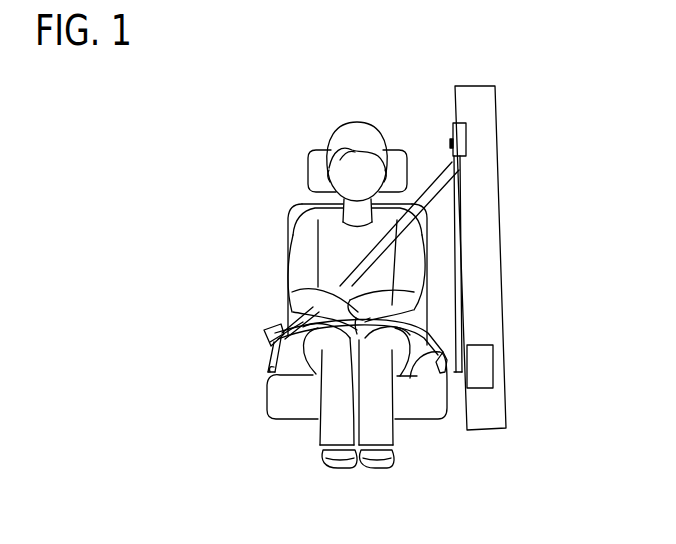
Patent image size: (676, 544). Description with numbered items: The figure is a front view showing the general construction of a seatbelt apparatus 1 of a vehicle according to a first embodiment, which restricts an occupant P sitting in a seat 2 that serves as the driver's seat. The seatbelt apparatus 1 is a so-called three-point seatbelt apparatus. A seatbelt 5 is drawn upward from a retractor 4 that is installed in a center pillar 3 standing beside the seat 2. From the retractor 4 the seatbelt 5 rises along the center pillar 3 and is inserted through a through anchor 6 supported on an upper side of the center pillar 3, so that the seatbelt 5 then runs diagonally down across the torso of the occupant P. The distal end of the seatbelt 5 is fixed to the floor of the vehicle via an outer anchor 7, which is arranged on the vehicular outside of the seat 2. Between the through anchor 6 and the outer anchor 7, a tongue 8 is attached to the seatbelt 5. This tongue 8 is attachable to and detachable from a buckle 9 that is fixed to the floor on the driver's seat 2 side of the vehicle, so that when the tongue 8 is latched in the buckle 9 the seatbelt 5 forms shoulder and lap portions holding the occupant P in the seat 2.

The seatbelt apparatus 1 is at (436, 104).
The seat 2 is at (298, 421).
The center pillar 3 is at (498, 220).
The retractor 4 is at (493, 357).
The seatbelt 5 is at (357, 260).
The through anchor 6 is at (450, 148).
The outer anchor 7 is at (426, 362).
The tongue 8 is at (272, 338).
The buckle 9 is at (273, 358).
The occupant P is at (302, 205).